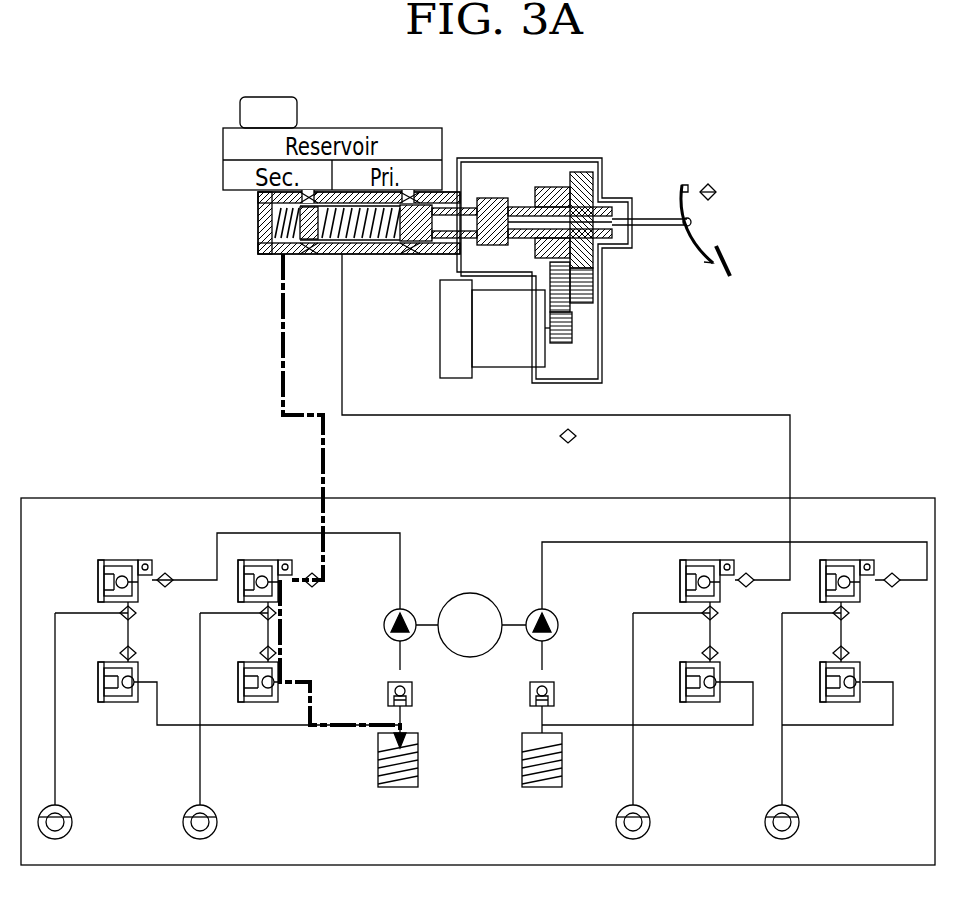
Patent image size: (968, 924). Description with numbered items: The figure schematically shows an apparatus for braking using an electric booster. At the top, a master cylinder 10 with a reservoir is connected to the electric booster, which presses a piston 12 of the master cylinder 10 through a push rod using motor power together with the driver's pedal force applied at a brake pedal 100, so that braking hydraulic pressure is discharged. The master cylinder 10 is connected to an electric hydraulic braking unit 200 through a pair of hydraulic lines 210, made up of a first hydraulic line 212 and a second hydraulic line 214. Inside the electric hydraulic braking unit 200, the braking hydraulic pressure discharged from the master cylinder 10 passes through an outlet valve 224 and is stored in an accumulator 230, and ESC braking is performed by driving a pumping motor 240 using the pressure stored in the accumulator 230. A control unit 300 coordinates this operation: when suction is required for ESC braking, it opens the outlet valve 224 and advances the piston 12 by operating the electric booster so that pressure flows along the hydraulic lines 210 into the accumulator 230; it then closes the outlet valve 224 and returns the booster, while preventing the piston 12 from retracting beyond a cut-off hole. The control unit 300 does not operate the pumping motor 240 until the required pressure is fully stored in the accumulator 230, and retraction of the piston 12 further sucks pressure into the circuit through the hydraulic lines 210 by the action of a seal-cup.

The master cylinder 10 is at (341, 178).
The piston 12 is at (432, 196).
The brake pedal 100 is at (683, 185).
The electric hydraulic braking unit 200 is at (858, 497).
The hydraulic lines 210 is at (172, 350).
The first hydraulic line 212 is at (281, 410).
The second hydraulic line 214 is at (341, 344).
The outlet valve 224 is at (268, 702).
The accumulator 230 is at (418, 776).
The pumping motor 240 is at (470, 593).
The control unit 300 is at (440, 341).